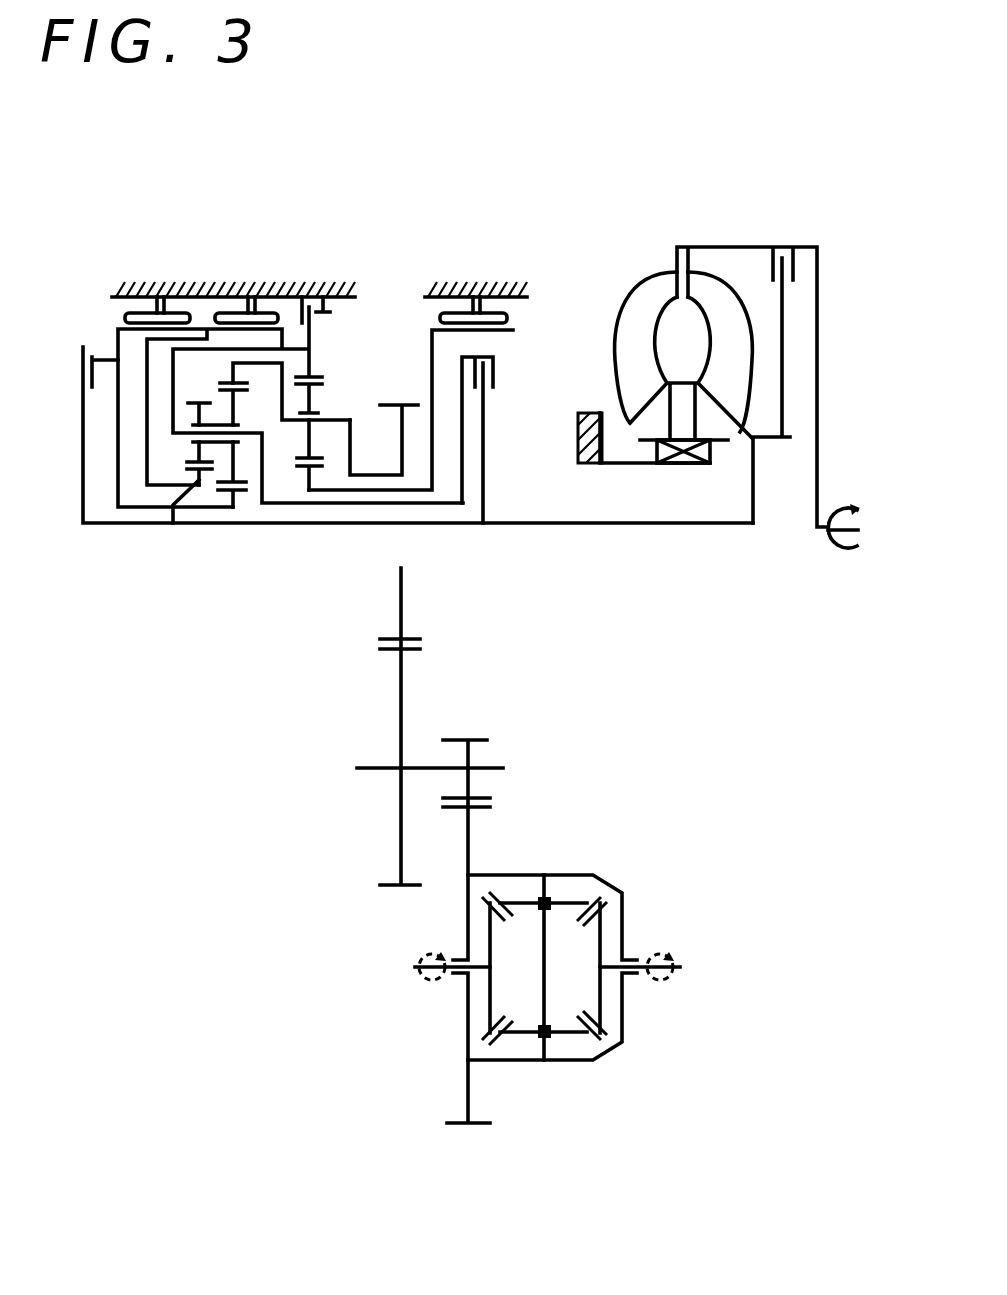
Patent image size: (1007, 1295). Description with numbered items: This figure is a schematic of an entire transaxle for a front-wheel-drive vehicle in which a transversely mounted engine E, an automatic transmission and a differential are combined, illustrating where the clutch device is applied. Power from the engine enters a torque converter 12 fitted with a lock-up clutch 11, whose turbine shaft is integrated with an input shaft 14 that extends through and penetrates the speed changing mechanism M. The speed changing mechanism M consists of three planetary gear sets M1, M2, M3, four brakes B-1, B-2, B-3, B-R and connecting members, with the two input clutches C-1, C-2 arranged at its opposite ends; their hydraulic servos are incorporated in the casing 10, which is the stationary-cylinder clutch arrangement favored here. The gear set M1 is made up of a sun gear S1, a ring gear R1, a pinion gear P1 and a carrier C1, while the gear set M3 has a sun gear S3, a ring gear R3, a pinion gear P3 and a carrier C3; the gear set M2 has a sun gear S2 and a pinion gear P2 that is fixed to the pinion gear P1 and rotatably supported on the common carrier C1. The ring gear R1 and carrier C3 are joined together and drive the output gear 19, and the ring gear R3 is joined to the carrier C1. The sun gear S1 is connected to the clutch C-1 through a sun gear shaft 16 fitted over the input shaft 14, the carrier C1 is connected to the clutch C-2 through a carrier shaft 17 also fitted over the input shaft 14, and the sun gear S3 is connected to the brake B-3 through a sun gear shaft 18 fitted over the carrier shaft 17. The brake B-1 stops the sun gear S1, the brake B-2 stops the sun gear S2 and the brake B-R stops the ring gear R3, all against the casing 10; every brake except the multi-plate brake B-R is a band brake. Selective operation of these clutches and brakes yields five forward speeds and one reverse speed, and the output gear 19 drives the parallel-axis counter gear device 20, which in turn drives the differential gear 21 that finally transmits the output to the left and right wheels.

The casing of the speed changing mechanism 10 is at (118, 288).
The lock-up clutch 11 is at (770, 270).
The torque converter 12 is at (667, 273).
The input shaft 14 is at (510, 523).
The sun gear shaft 16 is at (138, 523).
The carrier shaft 17 is at (437, 507).
The sun gear shaft 18 is at (380, 477).
The output gear 19 is at (408, 400).
The counter gear device 20 is at (450, 716).
The differential gear 21 is at (607, 869).
The brake B-1 is at (191, 290).
The brake B-2 is at (279, 290).
The brake B-R is at (344, 290).
The brake B-3 is at (503, 290).
The input clutch C-1 is at (62, 352).
The input clutch C-2 is at (499, 345).
The ring gear R1 is at (232, 370).
The pinion gear P1 is at (237, 405).
The carrier C1 is at (262, 424).
The sun gear S1 is at (240, 492).
The pinion gear P2 is at (190, 455).
The sun gear S2 is at (172, 523).
The ring gear R3 is at (316, 365).
The pinion gear P3 is at (321, 385).
The sun gear S3 is at (300, 470).
The carrier C3 is at (332, 410).
The speed changing mechanism M is at (384, 240).
The planetary gear set M1 is at (231, 534).
The planetary gear set M2 is at (194, 533).
The planetary gear set M3 is at (312, 533).
The engine E is at (844, 526).